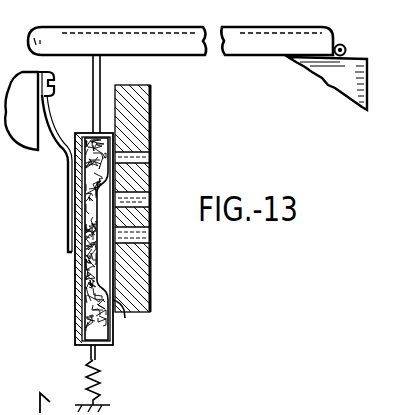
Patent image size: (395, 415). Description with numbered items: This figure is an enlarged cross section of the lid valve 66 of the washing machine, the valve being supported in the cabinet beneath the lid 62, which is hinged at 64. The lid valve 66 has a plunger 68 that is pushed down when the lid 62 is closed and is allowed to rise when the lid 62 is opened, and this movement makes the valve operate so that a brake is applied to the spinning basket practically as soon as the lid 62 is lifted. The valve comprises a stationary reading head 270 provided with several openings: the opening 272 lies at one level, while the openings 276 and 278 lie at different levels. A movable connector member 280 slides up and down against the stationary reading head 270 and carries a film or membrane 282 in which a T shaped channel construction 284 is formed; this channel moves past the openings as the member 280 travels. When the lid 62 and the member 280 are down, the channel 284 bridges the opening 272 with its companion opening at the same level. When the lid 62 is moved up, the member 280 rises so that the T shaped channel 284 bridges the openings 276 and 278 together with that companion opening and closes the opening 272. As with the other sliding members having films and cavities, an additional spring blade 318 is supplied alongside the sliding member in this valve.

The lid 62 is at (245, 28).
The hinge 64 is at (346, 46).
The lid valve 66 is at (164, 315).
The plunger 68 is at (100, 71).
The stationary reading head 270 is at (150, 277).
The opening 272 is at (150, 241).
The opening 276 is at (150, 197).
The opening 278 is at (150, 157).
The movable connector member 280 is at (75, 310).
The film or membrane 282 is at (125, 318).
The T shaped channel construction 284 is at (85, 277).
The spring blade 318 is at (60, 143).